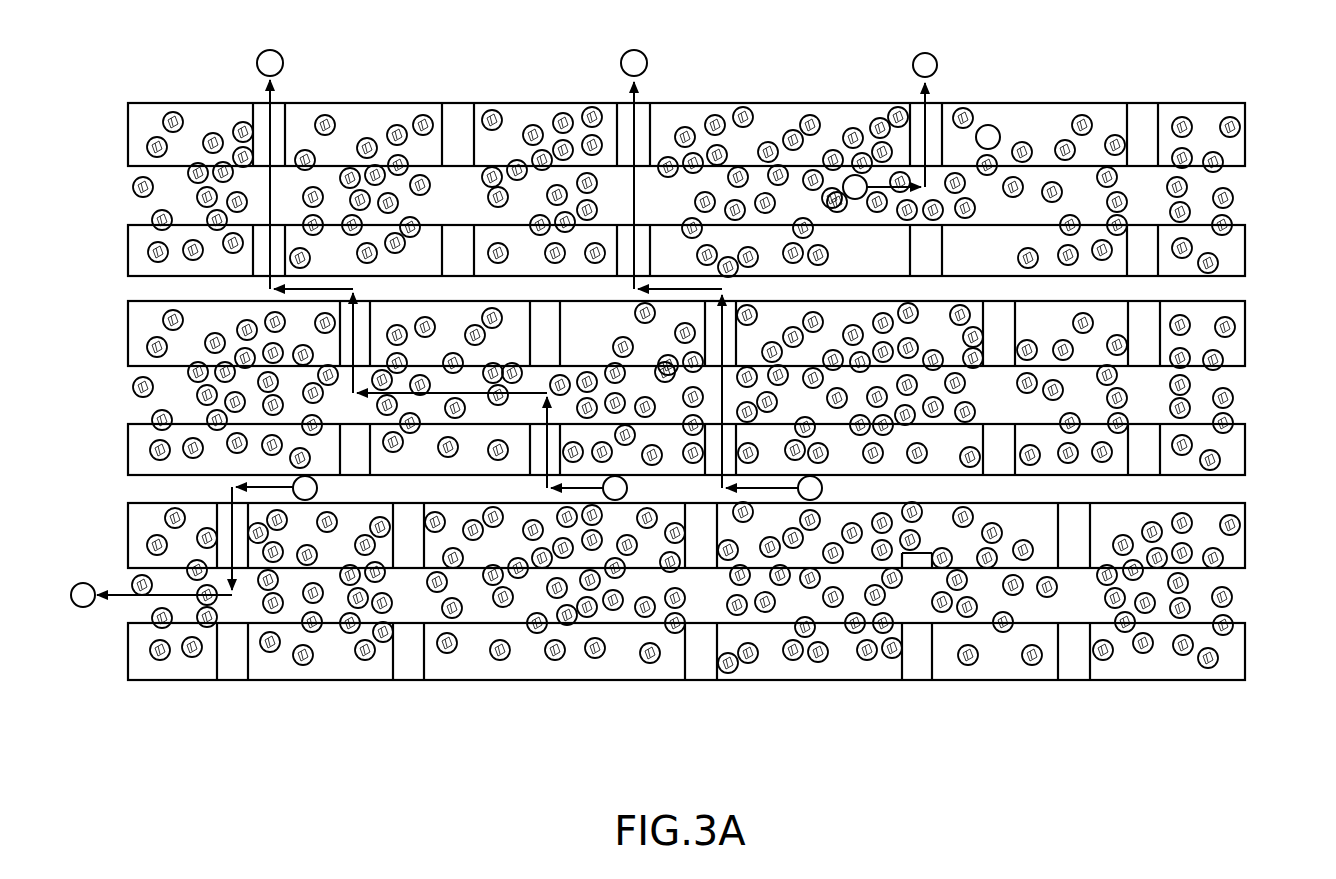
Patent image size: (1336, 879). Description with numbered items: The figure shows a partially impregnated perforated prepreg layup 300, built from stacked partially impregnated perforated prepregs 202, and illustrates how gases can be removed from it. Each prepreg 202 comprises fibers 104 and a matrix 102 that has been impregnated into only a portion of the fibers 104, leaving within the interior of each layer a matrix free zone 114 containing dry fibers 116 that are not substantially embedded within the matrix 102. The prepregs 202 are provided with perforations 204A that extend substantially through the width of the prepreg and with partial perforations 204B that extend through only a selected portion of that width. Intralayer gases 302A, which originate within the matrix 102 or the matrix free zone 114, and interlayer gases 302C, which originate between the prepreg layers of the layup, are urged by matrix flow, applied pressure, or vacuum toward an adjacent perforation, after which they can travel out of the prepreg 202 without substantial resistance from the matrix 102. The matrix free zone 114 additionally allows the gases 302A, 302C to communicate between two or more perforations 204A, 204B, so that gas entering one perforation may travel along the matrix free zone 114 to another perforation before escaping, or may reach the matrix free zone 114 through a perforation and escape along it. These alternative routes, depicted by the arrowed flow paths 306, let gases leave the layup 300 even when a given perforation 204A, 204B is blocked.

The partially impregnated perforated prepreg layup 300 is at (698, 417).
The matrix 102 is at (686, 390).
The fibers 104 is at (686, 134).
The dry fibers 116 is at (143, 176).
The matrix free zone 114 is at (1234, 194).
The partially impregnated perforated prepreg 202 is at (1180, 680).
The perforation 204A is at (1130, 113).
The partial perforation 204B is at (917, 663).
The intralayer gas 302A is at (857, 176).
The interlayer gas 302C is at (800, 498).
The flow path 306 is at (270, 63).